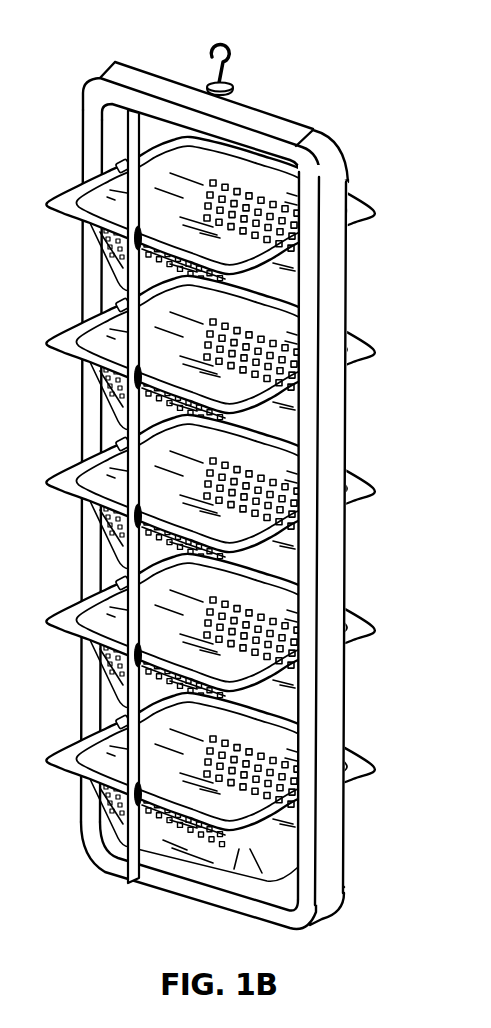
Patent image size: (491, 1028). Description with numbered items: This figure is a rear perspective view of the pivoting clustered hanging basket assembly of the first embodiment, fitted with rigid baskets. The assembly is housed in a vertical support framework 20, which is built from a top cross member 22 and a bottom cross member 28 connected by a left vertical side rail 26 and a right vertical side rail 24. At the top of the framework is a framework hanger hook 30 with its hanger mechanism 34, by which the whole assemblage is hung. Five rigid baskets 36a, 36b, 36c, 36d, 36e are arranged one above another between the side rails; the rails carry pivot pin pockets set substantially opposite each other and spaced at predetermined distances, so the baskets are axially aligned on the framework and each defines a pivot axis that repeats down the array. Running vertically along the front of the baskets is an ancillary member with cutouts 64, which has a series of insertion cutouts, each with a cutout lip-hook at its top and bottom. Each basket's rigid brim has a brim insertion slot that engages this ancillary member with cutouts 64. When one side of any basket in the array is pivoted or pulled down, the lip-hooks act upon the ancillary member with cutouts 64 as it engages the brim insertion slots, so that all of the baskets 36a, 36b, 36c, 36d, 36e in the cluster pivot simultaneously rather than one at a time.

The vertical support framework 20 is at (206, 474).
The top cross member 22 is at (163, 80).
The right vertical side rail 24 is at (82, 298).
The left vertical side rail 26 is at (345, 593).
The bottom cross member 28 is at (197, 898).
The framework hanger hook 30 is at (230, 53).
The hanger mechanism 34 is at (232, 88).
The rigid basket 36a is at (187, 231).
The rigid basket 36b is at (187, 370).
The rigid basket 36c is at (187, 509).
The rigid basket 36d is at (187, 648).
The rigid basket 36e is at (187, 787).
The ancillary member with cutouts 64 is at (130, 887).